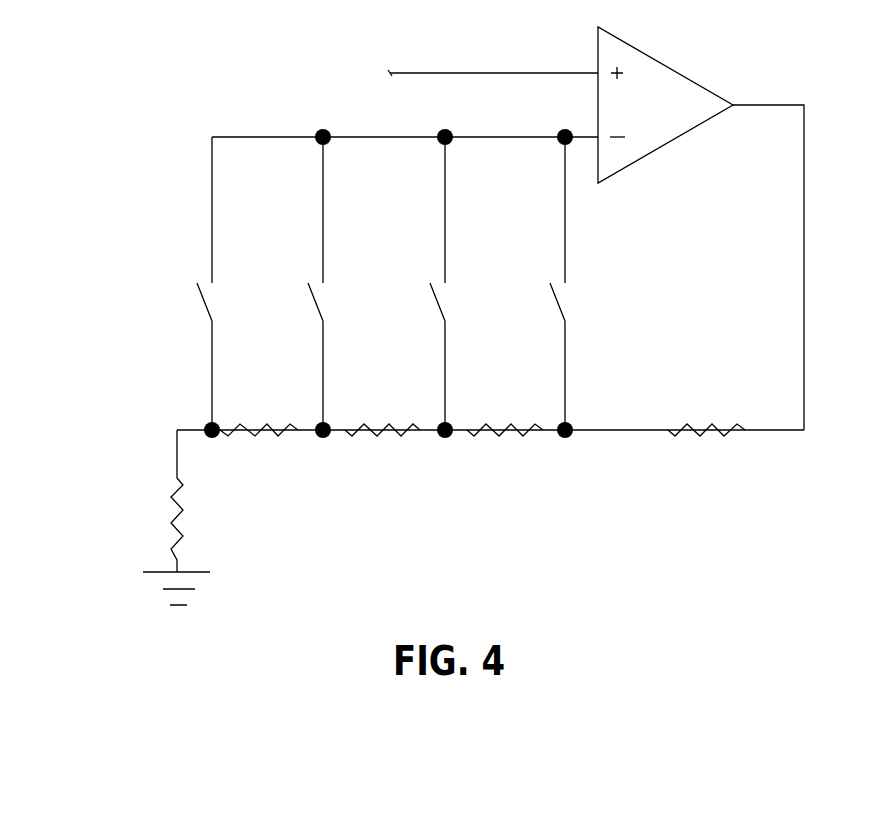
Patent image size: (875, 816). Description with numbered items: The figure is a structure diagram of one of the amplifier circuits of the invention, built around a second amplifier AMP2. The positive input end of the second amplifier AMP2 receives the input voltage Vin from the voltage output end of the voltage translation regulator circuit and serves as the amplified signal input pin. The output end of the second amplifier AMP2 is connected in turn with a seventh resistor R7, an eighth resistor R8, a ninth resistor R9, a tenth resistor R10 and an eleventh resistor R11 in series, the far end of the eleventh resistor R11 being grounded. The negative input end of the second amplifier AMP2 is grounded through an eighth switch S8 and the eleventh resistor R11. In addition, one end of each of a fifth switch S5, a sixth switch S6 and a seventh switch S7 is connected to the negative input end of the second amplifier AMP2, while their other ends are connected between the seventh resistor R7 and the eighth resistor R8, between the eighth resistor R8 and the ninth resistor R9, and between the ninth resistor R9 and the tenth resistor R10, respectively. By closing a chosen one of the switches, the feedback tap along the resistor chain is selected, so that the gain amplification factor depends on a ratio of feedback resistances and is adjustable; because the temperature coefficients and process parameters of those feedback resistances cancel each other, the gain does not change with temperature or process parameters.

The input voltage Vin is at (475, 48).
The second amplifier AMP2 is at (683, 105).
The fifth switch S5 is at (579, 283).
The sixth switch S6 is at (461, 283).
The seventh switch S7 is at (338, 283).
The eighth switch S8 is at (225, 283).
The seventh resistor R7 is at (706, 456).
The eighth resistor R8 is at (505, 455).
The ninth resistor R9 is at (382, 455).
The tenth resistor R10 is at (266, 455).
The eleventh resistor R11 is at (163, 517).